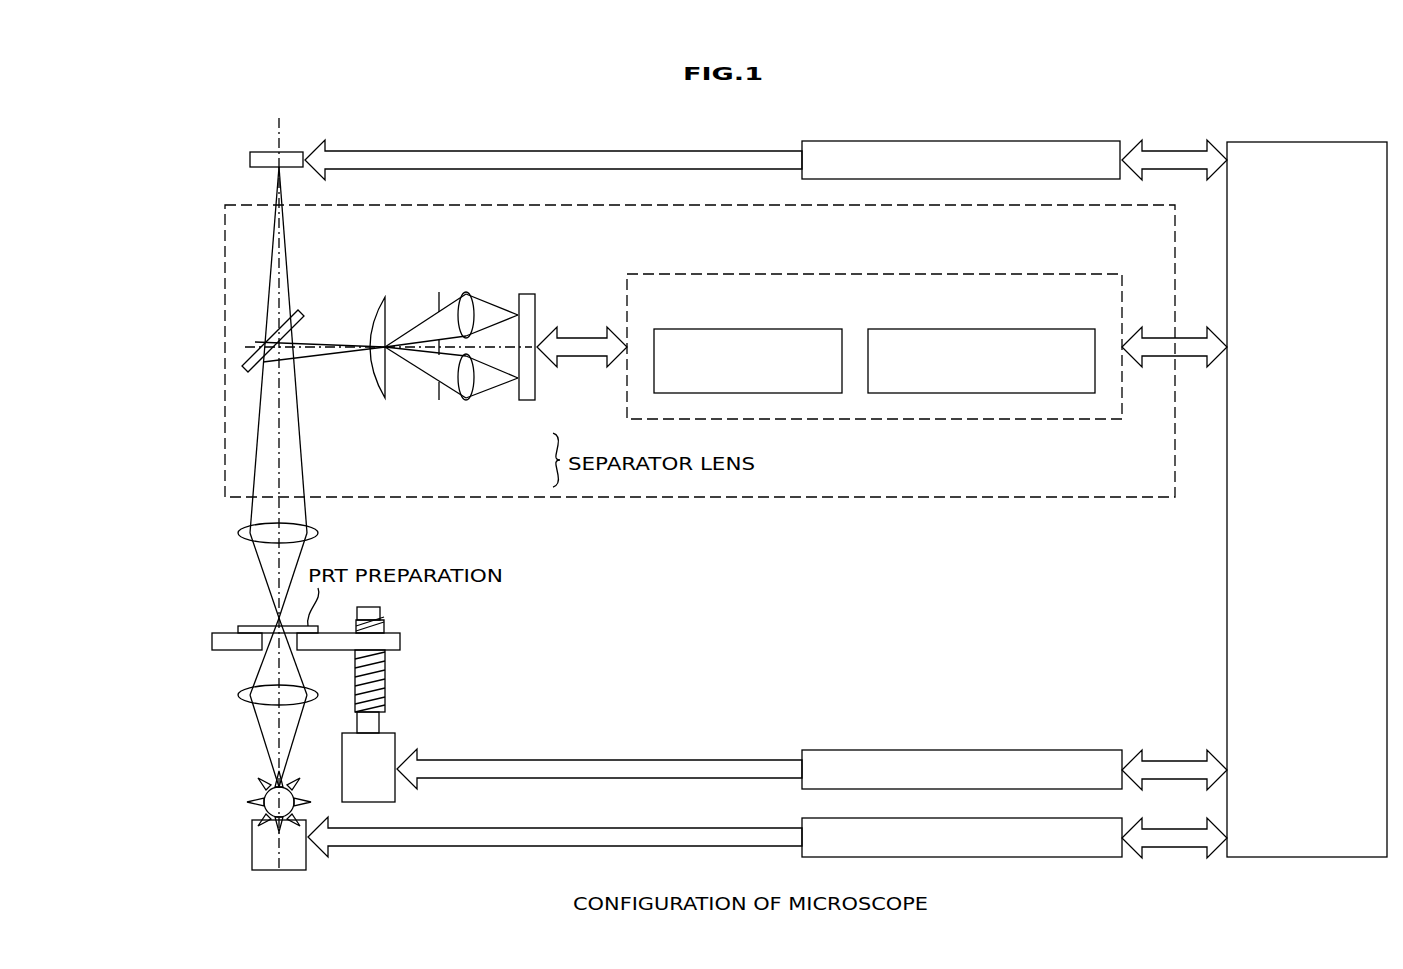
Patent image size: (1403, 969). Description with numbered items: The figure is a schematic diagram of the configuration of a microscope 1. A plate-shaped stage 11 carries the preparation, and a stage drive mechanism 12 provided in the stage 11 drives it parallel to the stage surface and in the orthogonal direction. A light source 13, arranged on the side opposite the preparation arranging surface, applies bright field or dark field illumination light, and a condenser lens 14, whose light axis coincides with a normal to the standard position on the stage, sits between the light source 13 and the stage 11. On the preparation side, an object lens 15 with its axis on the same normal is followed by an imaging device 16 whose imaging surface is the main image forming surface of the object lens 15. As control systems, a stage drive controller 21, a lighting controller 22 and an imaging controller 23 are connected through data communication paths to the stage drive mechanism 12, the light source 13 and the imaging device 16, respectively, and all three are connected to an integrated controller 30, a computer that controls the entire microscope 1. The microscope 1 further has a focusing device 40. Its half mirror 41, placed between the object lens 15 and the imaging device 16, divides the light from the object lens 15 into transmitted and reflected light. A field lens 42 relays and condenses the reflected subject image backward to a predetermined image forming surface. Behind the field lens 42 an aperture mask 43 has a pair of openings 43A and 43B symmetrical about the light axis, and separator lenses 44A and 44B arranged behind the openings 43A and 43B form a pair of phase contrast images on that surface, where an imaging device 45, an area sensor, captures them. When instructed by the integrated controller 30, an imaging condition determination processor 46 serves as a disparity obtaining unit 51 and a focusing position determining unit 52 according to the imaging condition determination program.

The microscope 1 is at (1392, 72).
The stage 11 is at (400, 641).
The stage drive mechanism 12 is at (397, 745).
The light source 13 is at (306, 870).
The condenser lens 14 is at (244, 702).
The object lens 15 is at (318, 533).
The imaging device 16 is at (292, 150).
The stage drive controller 21 is at (1037, 749).
The lighting controller 22 is at (1033, 858).
The imaging controller 23 is at (996, 140).
The integrated controller 30 is at (1335, 141).
The focusing device 40 is at (931, 498).
The half mirror 41 is at (303, 310).
The field lens 42 is at (365, 300).
The aperture mask 43 is at (439, 400).
The opening 43A is at (428, 326).
The opening 43B is at (428, 373).
The separator lens 44A is at (474, 335).
The separator lens 44B is at (474, 398).
The imaging device 45 is at (527, 294).
The imaging condition determination processor 46 is at (623, 292).
The disparity obtaining unit 51 is at (773, 328).
The focusing position determining unit 52 is at (999, 328).